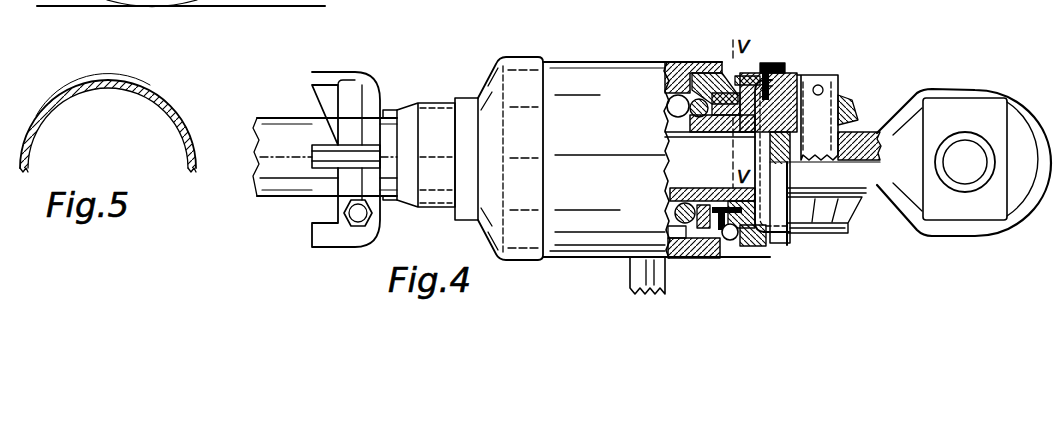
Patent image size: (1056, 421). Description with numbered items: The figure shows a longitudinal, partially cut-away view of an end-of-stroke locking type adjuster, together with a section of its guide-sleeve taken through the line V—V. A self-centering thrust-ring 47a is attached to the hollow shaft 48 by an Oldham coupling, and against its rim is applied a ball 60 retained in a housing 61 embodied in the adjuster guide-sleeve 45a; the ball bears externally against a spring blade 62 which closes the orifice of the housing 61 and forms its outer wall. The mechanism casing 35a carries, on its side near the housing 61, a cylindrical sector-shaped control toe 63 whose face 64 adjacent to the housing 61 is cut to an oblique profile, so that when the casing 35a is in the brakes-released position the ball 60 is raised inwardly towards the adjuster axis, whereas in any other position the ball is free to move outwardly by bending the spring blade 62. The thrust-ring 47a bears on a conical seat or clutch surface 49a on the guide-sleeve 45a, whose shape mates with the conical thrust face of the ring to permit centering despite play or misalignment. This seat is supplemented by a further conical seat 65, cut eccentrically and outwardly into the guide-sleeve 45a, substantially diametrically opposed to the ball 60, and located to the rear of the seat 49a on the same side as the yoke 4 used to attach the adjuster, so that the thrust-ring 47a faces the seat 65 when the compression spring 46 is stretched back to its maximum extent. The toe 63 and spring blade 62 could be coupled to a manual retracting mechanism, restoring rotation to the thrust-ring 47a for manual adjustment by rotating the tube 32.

In FIG. 4, the yoke 4 is at (857, 119).
In FIG. 4, the tube 32 is at (279, 120).
In FIG. 4, the mechanism casing 35a is at (575, 66).
In FIG. 4, the adjuster guide-sleeve 45a is at (702, 74).
In FIG. 4, the compression spring 46 is at (666, 107).
In FIG. 4, the self-centering thrust-ring 47a is at (797, 70).
In FIG. 4, the hollow shaft 48 is at (708, 133).
In FIG. 5, the seat or clutch surface 49a is at (181, 125).
In FIG. 4, the seat or clutch surface 49a is at (690, 262).
In FIG. 4, the ball 60 is at (752, 190).
In FIG. 4, the housing 61 is at (749, 242).
In FIG. 4, the spring blade 62 is at (733, 241).
In FIG. 4, the control toe 63 is at (708, 254).
In FIG. 4, the face 64 is at (730, 248).
In FIG. 5, the eccentric seat 65 is at (121, 73).
In FIG. 4, the eccentric seat 65 is at (737, 77).